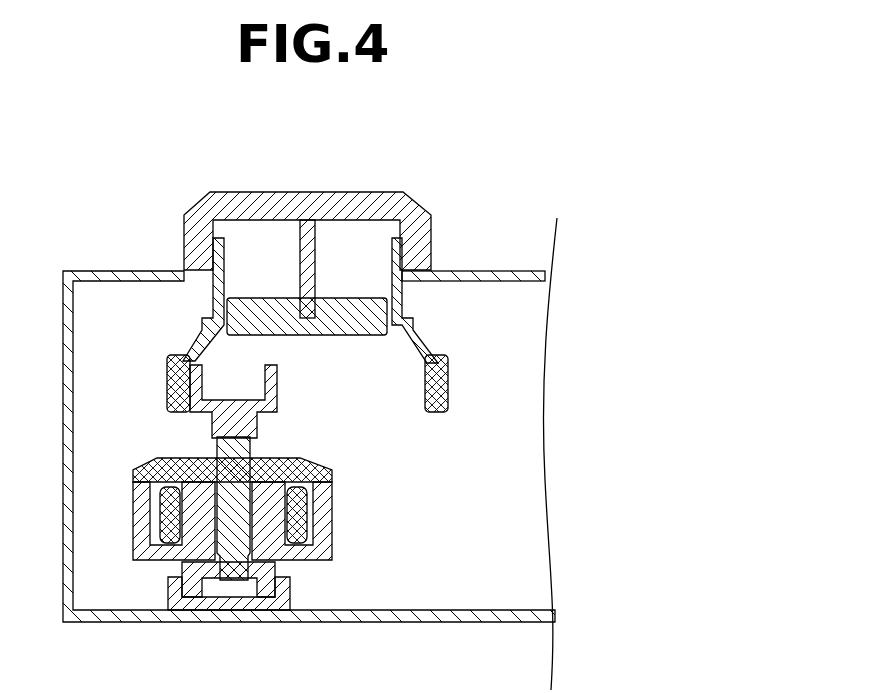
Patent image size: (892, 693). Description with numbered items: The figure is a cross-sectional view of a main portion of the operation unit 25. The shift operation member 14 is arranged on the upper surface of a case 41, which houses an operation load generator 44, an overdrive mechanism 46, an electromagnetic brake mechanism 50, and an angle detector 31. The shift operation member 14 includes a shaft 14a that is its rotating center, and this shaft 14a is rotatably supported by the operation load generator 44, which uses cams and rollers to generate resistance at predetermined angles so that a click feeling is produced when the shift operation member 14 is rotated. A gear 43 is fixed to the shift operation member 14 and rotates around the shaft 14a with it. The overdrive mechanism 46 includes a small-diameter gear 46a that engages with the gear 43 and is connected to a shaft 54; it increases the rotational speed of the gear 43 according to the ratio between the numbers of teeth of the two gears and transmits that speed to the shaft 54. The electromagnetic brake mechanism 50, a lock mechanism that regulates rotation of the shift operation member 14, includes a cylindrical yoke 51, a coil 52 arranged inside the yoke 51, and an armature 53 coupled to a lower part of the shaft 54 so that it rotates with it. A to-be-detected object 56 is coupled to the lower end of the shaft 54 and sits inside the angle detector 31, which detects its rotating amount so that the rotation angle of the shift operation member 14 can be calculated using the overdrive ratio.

The shift operation member 14 is at (383, 192).
The shaft 14a is at (320, 250).
The operation unit 25 is at (490, 168).
The angle detector 31 is at (289, 601).
The case 41 is at (63, 285).
The gear 43 is at (425, 400).
The operation load generator 44 is at (367, 335).
The overdrive mechanism 46 is at (277, 412).
The small-diameter gear 46a is at (200, 383).
The electromagnetic brake mechanism 50 is at (270, 524).
The yoke 51 is at (333, 550).
The coil 52 is at (160, 530).
The armature 53 is at (320, 476).
The shaft 54 is at (217, 450).
The to-be-detected object 56 is at (278, 570).